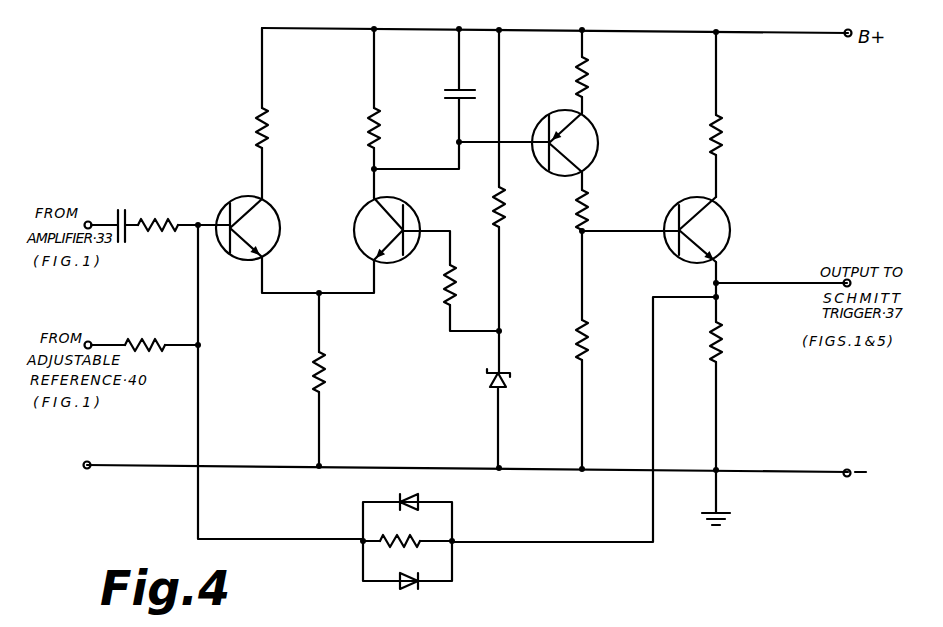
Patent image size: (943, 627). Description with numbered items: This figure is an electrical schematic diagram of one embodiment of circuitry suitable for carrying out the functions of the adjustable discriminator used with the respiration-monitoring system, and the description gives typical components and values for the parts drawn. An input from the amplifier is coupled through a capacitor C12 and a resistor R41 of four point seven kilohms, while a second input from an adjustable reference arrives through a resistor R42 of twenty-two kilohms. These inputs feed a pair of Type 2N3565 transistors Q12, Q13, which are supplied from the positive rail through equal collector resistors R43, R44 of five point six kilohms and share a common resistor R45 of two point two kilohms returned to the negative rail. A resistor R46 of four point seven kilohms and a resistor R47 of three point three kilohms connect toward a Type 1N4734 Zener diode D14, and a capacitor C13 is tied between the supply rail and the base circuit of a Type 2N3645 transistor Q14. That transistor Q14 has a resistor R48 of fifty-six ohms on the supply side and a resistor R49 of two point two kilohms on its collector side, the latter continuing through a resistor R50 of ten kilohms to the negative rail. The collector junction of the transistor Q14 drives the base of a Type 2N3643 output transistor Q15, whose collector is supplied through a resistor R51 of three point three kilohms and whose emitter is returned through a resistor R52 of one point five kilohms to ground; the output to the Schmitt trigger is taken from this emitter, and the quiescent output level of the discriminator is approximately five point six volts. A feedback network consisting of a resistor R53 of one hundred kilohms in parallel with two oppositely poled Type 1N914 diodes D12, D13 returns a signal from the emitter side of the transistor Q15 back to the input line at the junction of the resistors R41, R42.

The capacitor C12 is at (122, 203).
The resistor R41 is at (163, 217).
The resistor R42 is at (176, 325).
The transistor Q12 is at (267, 198).
The transistor Q13 is at (411, 200).
The resistor R43 is at (274, 136).
The resistor R44 is at (382, 136).
The resistor R45 is at (332, 376).
The resistor R46 is at (455, 287).
The resistor R47 is at (506, 210).
The capacitor C13 is at (452, 84).
The transistor Q14 is at (598, 142).
The resistor R48 is at (591, 86).
The resistor R49 is at (594, 210).
The resistor R50 is at (589, 351).
The Zener diode D14 is at (508, 379).
The resistor R51 is at (727, 139).
The transistor Q15 is at (730, 223).
The resistor R52 is at (723, 344).
The resistor R53 is at (385, 545).
The diode D12 is at (414, 497).
The diode D13 is at (410, 589).